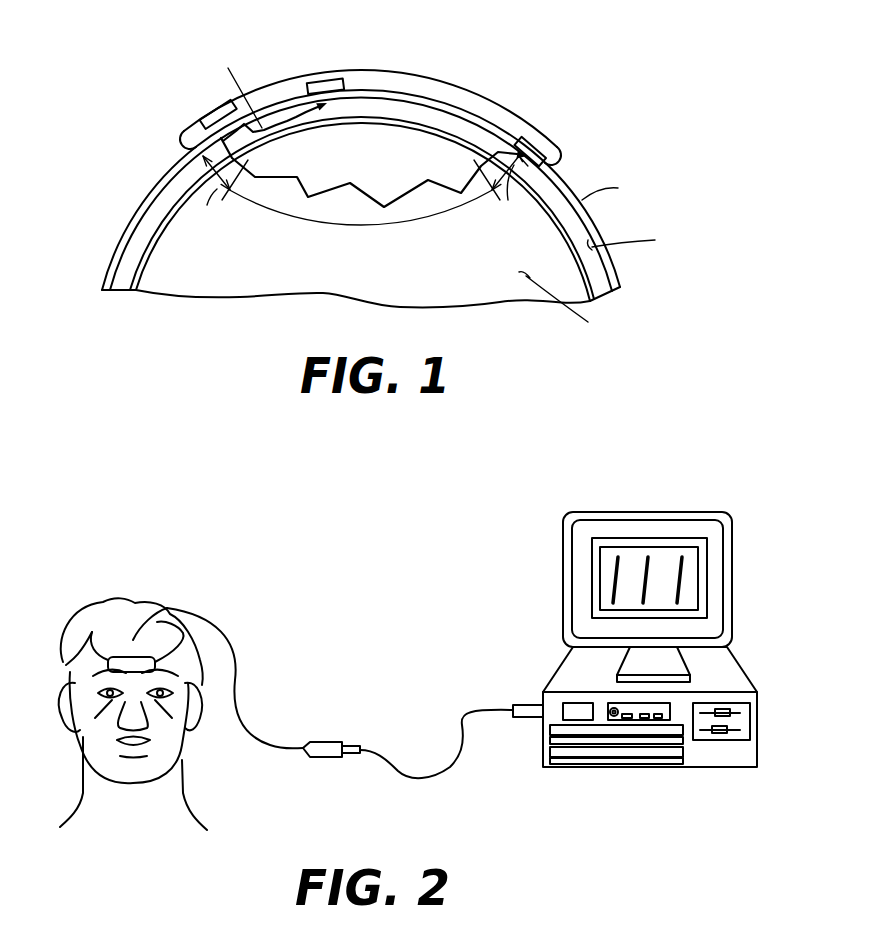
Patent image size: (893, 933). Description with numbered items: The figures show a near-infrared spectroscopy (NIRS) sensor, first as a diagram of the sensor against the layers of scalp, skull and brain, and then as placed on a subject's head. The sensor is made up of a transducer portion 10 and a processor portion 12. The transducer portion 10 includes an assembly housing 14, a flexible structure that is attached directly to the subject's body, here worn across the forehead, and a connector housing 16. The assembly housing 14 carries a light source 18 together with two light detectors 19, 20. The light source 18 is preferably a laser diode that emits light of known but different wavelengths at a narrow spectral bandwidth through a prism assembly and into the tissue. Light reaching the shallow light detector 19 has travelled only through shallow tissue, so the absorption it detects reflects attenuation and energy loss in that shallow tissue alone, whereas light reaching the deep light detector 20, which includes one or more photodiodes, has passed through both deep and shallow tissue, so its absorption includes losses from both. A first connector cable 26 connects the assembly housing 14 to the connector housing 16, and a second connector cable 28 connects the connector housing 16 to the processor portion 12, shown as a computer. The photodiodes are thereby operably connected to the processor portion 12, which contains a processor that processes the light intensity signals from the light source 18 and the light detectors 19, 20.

In FIG. 1, the transducer portion 10 is at (617, 72).
In FIG. 2, the transducer portion 10 is at (195, 598).
In FIG. 2, the processor portion 12 is at (735, 536).
In FIG. 1, the assembly housing 14 is at (443, 80).
In FIG. 2, the assembly housing 14 is at (108, 660).
In FIG. 2, the connector housing 16 is at (322, 758).
In FIG. 1, the light source 18 is at (207, 121).
In FIG. 1, the shallow light detector 19 is at (320, 80).
In FIG. 1, the deep light detector 20 is at (538, 137).
In FIG. 2, the first connector cable 26 is at (236, 676).
In FIG. 2, the second connector cable 28 is at (453, 769).